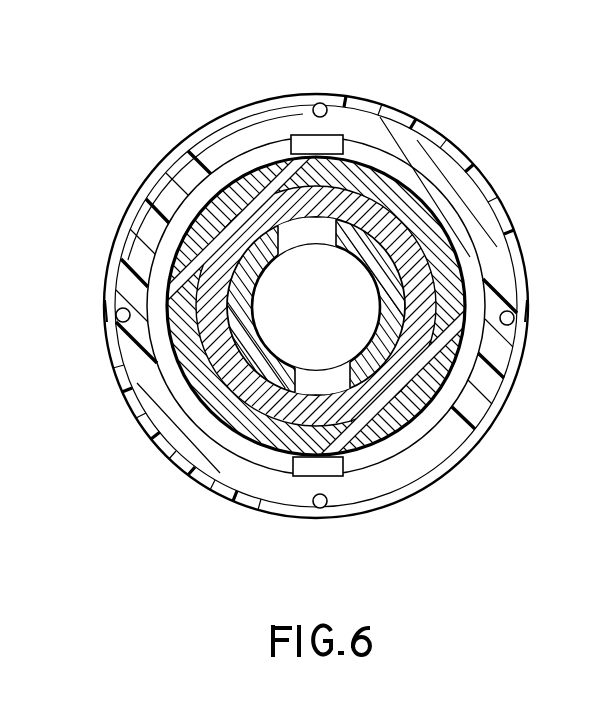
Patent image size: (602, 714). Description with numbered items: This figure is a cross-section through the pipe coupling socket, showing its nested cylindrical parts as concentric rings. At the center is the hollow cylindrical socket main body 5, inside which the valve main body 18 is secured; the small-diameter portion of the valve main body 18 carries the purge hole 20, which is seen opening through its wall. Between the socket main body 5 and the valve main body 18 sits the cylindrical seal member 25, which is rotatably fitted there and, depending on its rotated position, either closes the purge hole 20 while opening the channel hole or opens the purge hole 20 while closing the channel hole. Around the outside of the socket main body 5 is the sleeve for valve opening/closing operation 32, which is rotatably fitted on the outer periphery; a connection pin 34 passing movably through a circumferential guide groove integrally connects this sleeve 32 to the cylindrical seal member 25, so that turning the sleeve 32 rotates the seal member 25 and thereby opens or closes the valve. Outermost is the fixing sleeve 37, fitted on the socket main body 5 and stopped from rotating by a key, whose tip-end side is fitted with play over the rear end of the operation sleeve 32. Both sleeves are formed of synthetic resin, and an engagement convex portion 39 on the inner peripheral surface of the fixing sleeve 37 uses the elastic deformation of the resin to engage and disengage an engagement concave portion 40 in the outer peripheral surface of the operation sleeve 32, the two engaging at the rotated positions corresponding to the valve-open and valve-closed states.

The socket main body 5 is at (420, 172).
The valve main body 18 is at (265, 390).
The purge hole 20 is at (299, 215).
The cylindrical seal member 25 is at (462, 393).
The sleeve for valve opening/closing operation 32 is at (494, 204).
The connection pin 34 is at (338, 136).
The fixing sleeve 37 is at (470, 166).
The engagement convex portion 39 is at (112, 312).
The engagement concave portion 40 is at (320, 103).